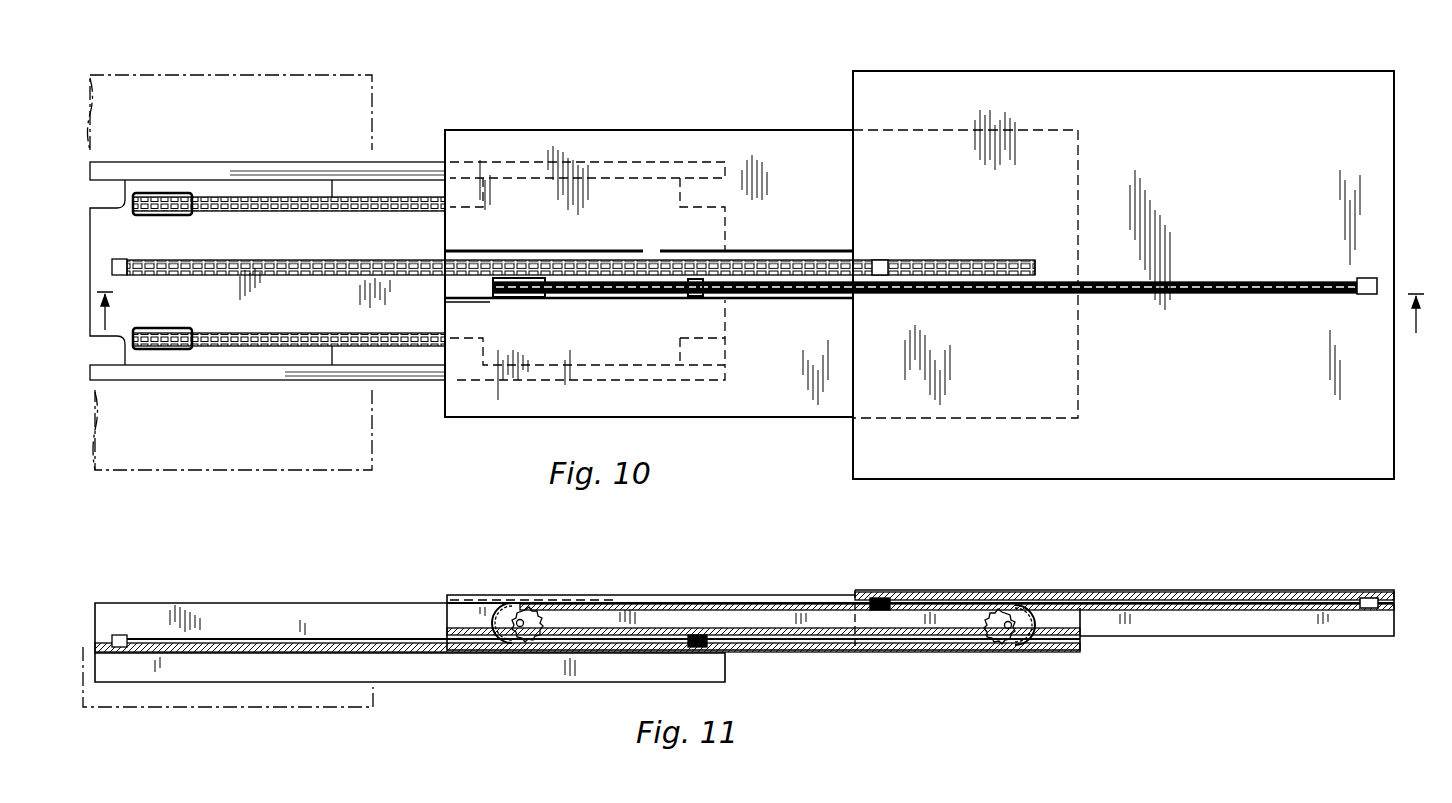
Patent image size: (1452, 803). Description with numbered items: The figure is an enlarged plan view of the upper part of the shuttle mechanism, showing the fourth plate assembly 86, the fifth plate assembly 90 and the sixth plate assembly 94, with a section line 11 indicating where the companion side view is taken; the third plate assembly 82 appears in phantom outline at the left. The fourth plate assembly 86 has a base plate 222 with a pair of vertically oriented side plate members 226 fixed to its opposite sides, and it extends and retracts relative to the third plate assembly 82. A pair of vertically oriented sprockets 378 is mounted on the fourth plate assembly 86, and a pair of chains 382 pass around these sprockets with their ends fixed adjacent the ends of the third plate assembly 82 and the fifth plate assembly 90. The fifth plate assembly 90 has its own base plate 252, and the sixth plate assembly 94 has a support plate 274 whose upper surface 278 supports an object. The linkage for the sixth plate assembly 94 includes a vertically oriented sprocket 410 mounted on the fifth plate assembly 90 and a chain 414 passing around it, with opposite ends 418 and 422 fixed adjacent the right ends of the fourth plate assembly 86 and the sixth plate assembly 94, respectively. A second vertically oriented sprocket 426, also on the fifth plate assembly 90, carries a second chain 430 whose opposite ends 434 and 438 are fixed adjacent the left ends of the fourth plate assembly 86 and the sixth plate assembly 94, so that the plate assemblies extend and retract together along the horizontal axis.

In FIG. 10, the third plate assembly 82 is at (326, 66).
In FIG. 11, the third plate assembly 82 is at (230, 711).
In FIG. 10, the fourth plate assembly 86 is at (414, 158).
In FIG. 11, the fourth plate assembly 86 is at (323, 603).
In FIG. 10, the fifth plate assembly 90 is at (638, 130).
In FIG. 11, the fifth plate assembly 90 is at (1054, 650).
In FIG. 10, the sixth plate assembly 94 is at (981, 70).
In FIG. 11, the sixth plate assembly 94 is at (1240, 637).
In FIG. 10, the line 11— 11 is at (763, 329).
In FIG. 10, the base plate 222 is at (272, 246).
In FIG. 10, the side plate members 226 is at (248, 162).
In FIG. 10, the base plate 252 is at (810, 135).
In FIG. 10, the support plate 274 is at (1269, 71).
In FIG. 10, the upper surface 278 is at (1278, 160).
In FIG. 10, the sprockets 378 is at (168, 194).
In FIG. 10, the chains 382 is at (291, 197).
In FIG. 10, the sprocket 410 is at (493, 298).
In FIG. 11, the sprocket 410 is at (523, 619).
In FIG. 10, the chain 414 is at (771, 296).
In FIG. 11, the chain 414 is at (661, 603).
In FIG. 10, the chain end 418 is at (692, 300).
In FIG. 11, the chain end 418 is at (697, 634).
In FIG. 10, the chain end 422 is at (1363, 296).
In FIG. 11, the chain end 422 is at (1372, 598).
In FIG. 10, the second sprocket 426 is at (1006, 261).
In FIG. 11, the second sprocket 426 is at (1016, 608).
In FIG. 10, the second chain 430 is at (380, 260).
In FIG. 11, the second chain 430 is at (312, 640).
In FIG. 10, the chain end 434 is at (130, 263).
In FIG. 11, the chain end 434 is at (126, 635).
In FIG. 10, the chain end 438 is at (886, 260).
In FIG. 11, the chain end 438 is at (881, 598).